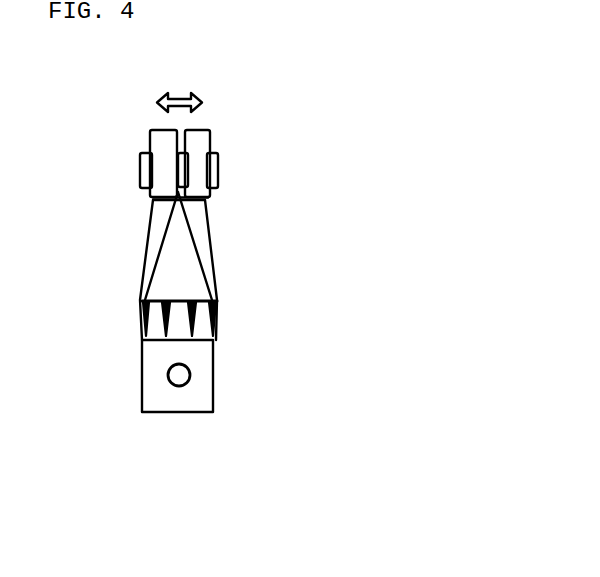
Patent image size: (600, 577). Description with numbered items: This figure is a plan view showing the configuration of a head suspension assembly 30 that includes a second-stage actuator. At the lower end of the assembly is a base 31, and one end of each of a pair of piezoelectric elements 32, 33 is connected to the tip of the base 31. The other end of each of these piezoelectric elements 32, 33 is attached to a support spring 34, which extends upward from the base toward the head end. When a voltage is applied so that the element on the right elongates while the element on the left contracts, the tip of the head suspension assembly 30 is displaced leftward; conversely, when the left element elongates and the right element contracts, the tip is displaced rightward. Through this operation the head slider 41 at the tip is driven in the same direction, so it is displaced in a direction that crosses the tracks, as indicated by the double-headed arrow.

The head suspension assembly 30 is at (294, 70).
The base 31 is at (175, 413).
The piezoelectric element 32 is at (215, 332).
The piezoelectric element 33 is at (142, 333).
The support spring 34 is at (147, 243).
The head slider 41 is at (220, 177).